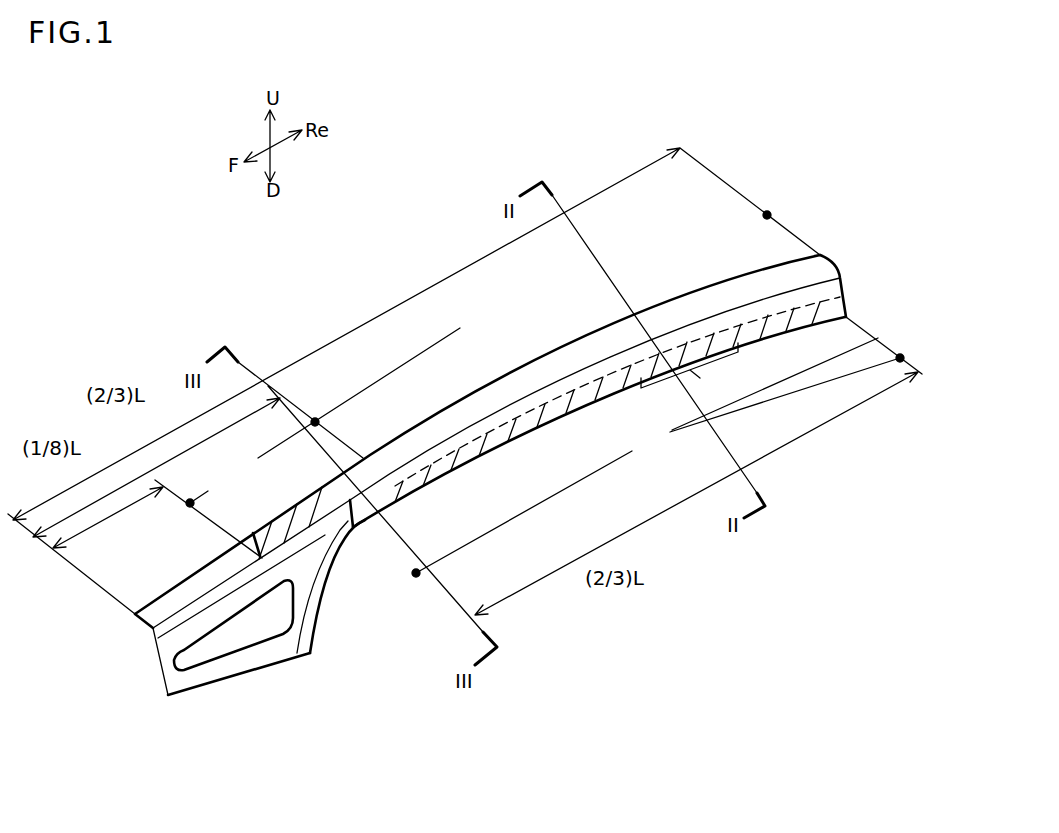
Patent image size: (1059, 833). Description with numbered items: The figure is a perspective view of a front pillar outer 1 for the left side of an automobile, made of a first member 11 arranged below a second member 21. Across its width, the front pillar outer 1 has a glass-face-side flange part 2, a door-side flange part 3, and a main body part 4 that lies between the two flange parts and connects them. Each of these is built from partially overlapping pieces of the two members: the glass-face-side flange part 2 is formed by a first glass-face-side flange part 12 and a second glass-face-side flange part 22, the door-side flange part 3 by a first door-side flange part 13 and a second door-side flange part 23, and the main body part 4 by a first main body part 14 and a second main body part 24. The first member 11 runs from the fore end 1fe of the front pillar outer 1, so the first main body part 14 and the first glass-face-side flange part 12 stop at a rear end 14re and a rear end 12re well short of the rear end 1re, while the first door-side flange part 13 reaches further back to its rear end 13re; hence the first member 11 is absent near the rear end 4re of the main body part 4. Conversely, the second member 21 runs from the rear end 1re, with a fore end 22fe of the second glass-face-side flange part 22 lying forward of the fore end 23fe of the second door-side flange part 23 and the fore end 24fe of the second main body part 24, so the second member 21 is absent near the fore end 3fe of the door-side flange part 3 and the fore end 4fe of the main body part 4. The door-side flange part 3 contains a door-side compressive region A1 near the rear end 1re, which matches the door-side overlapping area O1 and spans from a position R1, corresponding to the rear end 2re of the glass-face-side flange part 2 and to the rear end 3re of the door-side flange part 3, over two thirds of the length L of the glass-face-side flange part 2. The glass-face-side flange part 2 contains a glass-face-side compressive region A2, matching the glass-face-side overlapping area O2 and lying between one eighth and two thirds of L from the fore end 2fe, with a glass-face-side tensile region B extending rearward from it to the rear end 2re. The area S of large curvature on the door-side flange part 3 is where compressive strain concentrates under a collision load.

The front pillar outer 1 is at (92, 260).
The glass-face-side flange part 2 is at (120, 576).
The first glass-face-side flange part 12 is at (176, 540).
The first member 11 is at (100, 620).
The second member 21 is at (813, 234).
The second glass-face-side flange part 22 is at (593, 343).
The second door-side flange part 23 is at (483, 447).
The second main body part 24 is at (577, 372).
The door-side flange part 3 is at (347, 527).
The first door-side flange part 13 is at (558, 477).
The main body part 4 is at (193, 610).
The first main body part 14 is at (229, 681).
The fore end of the front pillar outer 1fe is at (149, 643).
The fore end of the glass-face-side flange part 2fe is at (140, 639).
The fore end of the door-side flange part 3fe is at (160, 672).
The fore end of the main body part 4fe is at (155, 655).
The fore end of the second glass-face-side flange part 22fe is at (242, 573).
The fore end of the second door-side flange part 23fe is at (345, 535).
The fore end of the second main body part 24fe is at (321, 557).
The rear end of the front pillar outer 1re is at (851, 270).
The rear end of the glass-face-side flange part 2re is at (824, 257).
The rear end of the door-side flange part 3re is at (846, 300).
The rear end of the main body part 4re is at (845, 290).
The rear end of the first glass-face-side flange part 12re is at (392, 488).
The rear end of the first door-side flange part 13re is at (840, 298).
The rear end of the first main body part 14re is at (397, 483).
The door-side overlapping area O1 is at (530, 424).
The glass-face-side overlapping area O2 is at (260, 537).
The door-side compressive region A1 is at (658, 455).
The glass-face-side compressive region A2 is at (325, 415).
The glass-face-side tensile region B is at (476, 328).
The length of the glass-face-side flange part L is at (465, 381).
The area of large curvature S is at (689, 370).
The position corresponding to the rear end of the glass-face-side flange part R1 is at (851, 317).